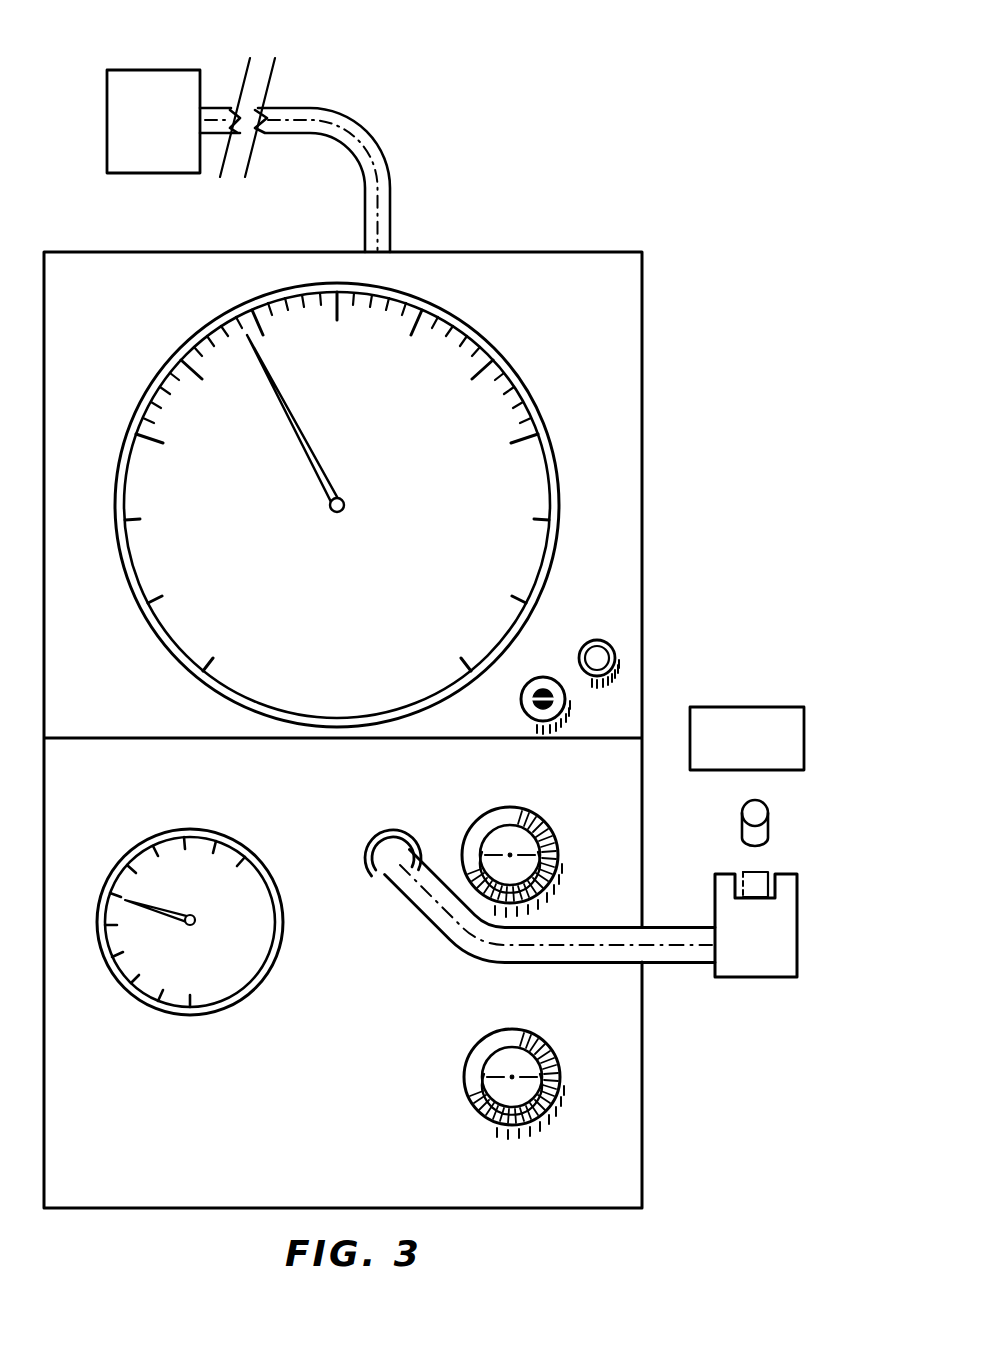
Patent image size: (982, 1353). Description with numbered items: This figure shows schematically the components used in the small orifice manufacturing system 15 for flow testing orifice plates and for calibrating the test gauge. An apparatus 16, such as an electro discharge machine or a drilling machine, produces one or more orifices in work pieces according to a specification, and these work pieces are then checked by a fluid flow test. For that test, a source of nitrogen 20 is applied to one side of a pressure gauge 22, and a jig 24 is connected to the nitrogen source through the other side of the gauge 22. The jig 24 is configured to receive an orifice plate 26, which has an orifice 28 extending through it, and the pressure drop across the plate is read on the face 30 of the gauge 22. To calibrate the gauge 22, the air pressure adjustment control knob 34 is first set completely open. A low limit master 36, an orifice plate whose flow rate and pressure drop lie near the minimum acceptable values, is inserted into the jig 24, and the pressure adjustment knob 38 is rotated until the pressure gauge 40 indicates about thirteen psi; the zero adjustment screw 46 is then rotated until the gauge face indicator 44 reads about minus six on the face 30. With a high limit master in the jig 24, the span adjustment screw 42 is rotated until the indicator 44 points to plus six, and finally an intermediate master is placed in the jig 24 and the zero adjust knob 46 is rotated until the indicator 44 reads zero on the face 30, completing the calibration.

The small orifice manufacturing system 15 is at (724, 664).
The apparatus 16 is at (806, 728).
The source of nitrogen 20 is at (140, 80).
The pressure gauge 22 is at (640, 328).
The jig 24 is at (798, 918).
The orifice plate 26 is at (770, 829).
The orifice 28 is at (757, 813).
The face 30 is at (480, 338).
The air pressure adjustment control knob 34 is at (527, 1062).
The low limit master 36 is at (757, 869).
The pressure adjustment knob 38 is at (556, 852).
The pressure gauge 40 is at (253, 852).
The span adjustment screw 42 is at (521, 701).
The gauge face indicator 44 is at (300, 427).
The zero adjustment screw 46 is at (597, 639).